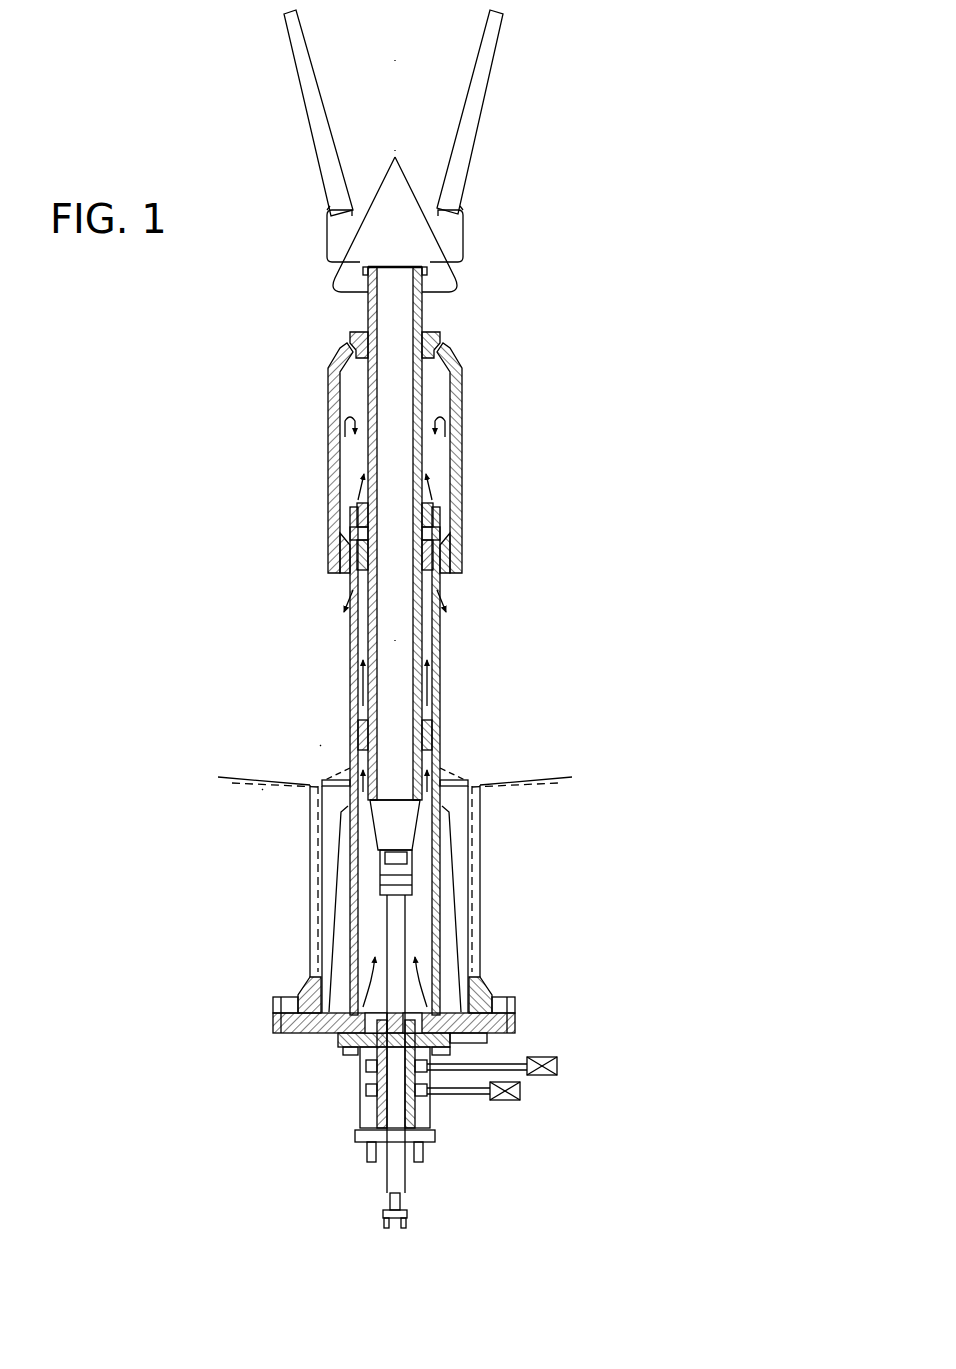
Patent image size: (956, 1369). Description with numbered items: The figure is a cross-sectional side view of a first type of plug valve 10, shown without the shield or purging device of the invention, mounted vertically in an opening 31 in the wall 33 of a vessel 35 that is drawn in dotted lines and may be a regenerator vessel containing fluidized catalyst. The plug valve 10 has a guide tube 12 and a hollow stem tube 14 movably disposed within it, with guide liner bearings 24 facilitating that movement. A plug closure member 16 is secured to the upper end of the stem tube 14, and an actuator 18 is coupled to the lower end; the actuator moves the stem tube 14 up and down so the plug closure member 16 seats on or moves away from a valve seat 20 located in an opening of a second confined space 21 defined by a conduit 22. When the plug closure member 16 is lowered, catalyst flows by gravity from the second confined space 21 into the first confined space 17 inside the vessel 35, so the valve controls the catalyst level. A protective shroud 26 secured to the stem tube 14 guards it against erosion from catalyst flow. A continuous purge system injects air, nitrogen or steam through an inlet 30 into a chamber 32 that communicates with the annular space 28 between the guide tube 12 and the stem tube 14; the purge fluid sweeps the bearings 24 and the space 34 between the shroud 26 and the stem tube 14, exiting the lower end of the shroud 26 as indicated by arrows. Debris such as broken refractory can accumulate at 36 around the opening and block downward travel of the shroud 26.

The plug valve 10 is at (502, 331).
The guide tube 12 is at (440, 652).
The stem tube 14 is at (422, 630).
The plug closure member 16 is at (404, 251).
The first confined space 17 is at (310, 677).
The actuator 18 is at (400, 1175).
The valve seat 20 is at (455, 240).
The second confined space 21 is at (403, 118).
The conduit 22 is at (465, 147).
The guide liner bearings 24 is at (437, 553).
The protective shroud 26 is at (462, 407).
The annular space 28 is at (358, 640).
The inlet 30 is at (515, 1025).
The opening 31 is at (472, 780).
The chamber 32 is at (420, 905).
The wall 33 is at (500, 783).
The space 34 is at (440, 460).
The vessel 35 is at (260, 792).
The debris accumulation location 36 is at (316, 742).